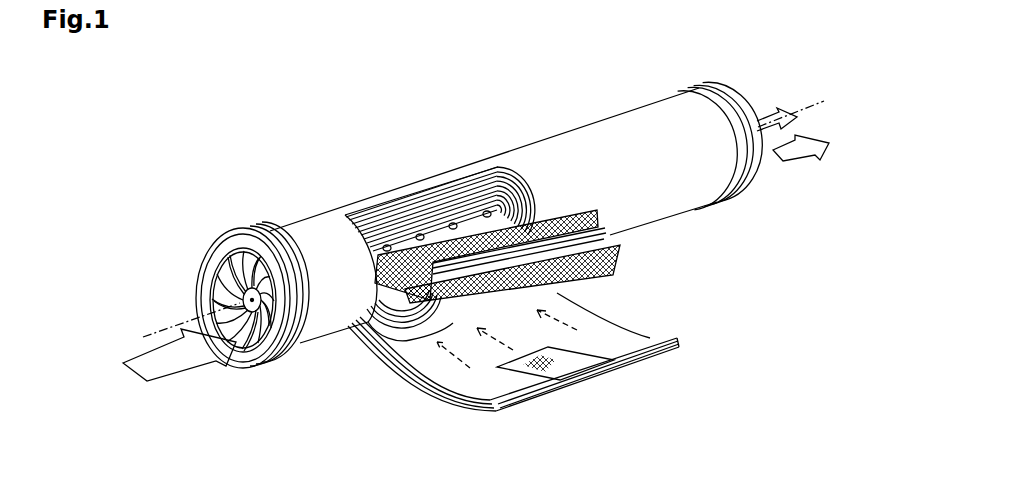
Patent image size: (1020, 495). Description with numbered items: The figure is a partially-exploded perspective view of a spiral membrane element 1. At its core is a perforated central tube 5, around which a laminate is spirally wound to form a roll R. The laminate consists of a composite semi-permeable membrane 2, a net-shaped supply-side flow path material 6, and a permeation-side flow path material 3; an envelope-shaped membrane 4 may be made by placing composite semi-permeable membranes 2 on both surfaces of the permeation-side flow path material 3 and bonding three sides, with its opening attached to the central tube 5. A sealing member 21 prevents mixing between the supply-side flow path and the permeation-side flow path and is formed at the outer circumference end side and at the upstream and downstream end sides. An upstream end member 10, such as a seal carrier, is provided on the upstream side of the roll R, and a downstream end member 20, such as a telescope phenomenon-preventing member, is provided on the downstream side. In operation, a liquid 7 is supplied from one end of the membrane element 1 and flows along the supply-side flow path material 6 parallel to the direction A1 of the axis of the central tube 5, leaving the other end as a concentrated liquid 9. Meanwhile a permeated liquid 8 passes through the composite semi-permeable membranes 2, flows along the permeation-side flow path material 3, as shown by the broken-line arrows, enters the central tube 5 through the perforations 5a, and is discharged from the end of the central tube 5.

The membrane element 1 is at (694, 246).
The roll R is at (516, 149).
The composite semi-permeable membrane 2 is at (613, 240).
The permeation-side flow path material 3 is at (380, 357).
The envelope-shaped membrane 4 is at (655, 373).
The central tube 5 is at (473, 223).
The perforations 5a is at (387, 245).
The supply-side flow path material 6 is at (573, 217).
The supplied liquid 7 is at (172, 371).
The permeated liquid 8 is at (772, 109).
The concentrated liquid 9 is at (796, 153).
The upstream end member 10 is at (238, 229).
The downstream end member 20 is at (735, 202).
The sealing member 21 is at (560, 371).
The direction of the axis of the central tube A1 is at (150, 334).